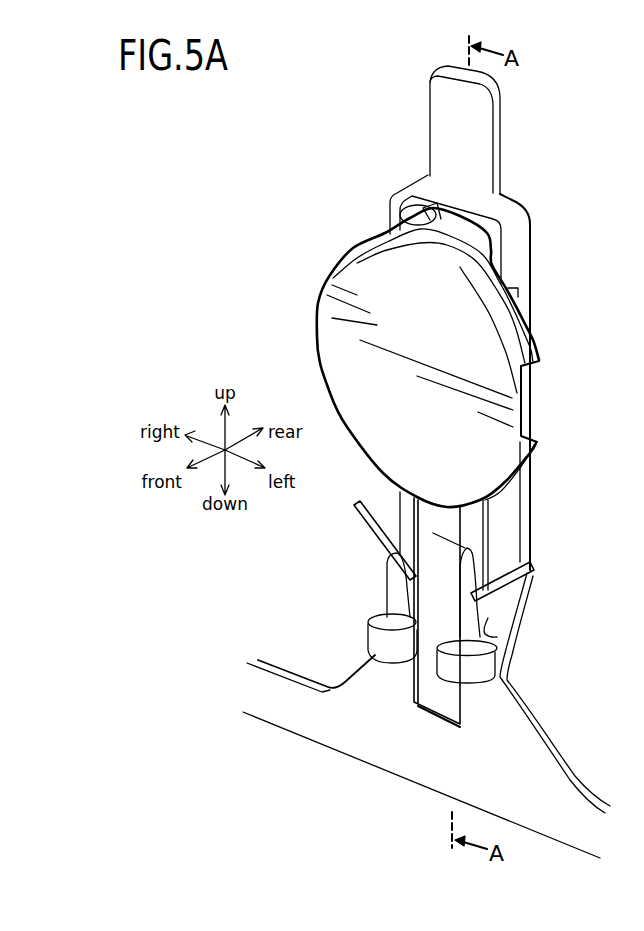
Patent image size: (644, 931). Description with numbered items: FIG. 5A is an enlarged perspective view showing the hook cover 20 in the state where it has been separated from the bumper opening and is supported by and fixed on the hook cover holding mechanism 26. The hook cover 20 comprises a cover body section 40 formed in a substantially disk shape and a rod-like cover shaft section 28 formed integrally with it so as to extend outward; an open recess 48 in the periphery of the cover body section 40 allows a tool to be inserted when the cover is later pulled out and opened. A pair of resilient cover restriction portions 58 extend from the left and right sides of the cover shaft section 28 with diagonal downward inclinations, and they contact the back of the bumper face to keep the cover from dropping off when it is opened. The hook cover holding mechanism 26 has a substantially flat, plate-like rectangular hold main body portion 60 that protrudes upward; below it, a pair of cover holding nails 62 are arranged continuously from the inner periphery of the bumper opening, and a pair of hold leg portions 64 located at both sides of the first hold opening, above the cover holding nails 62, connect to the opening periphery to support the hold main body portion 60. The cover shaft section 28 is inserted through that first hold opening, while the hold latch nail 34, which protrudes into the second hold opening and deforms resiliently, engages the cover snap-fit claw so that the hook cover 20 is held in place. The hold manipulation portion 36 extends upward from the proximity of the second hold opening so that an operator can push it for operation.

The hook cover 20 is at (300, 265).
The hook cover holding mechanism 26 is at (553, 200).
The cover shaft section 28 is at (435, 602).
The hold latch nail 34 is at (404, 210).
The hold manipulation portion 36 is at (462, 129).
The cover body section 40 is at (310, 322).
The open recess 48 is at (540, 428).
The cover restriction portions 58 is at (366, 521).
The hold main body portion 60 is at (543, 517).
The cover holding nails 62 is at (443, 674).
The hold leg portions 64 is at (392, 588).